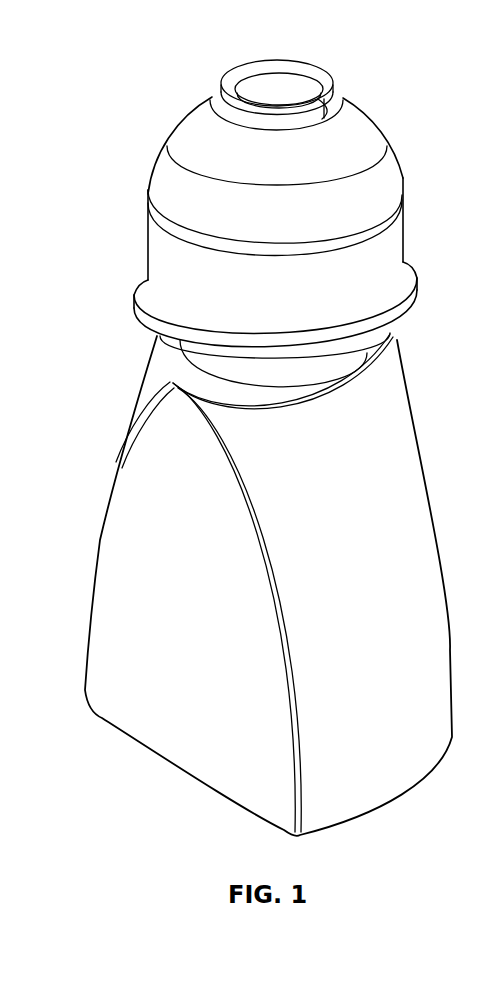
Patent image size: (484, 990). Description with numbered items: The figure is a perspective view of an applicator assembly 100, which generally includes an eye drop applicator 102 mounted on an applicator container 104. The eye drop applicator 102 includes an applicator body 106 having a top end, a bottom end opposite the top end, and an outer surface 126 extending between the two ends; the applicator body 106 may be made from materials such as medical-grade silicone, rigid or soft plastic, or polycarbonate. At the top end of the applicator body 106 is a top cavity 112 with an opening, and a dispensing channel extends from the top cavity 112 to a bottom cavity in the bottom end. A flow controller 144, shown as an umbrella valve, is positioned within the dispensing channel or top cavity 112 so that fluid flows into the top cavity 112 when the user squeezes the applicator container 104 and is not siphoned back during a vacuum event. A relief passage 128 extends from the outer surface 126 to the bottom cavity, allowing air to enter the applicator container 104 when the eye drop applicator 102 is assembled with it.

The applicator assembly 100 is at (122, 184).
The eye drop applicator 102 is at (188, 133).
The applicator container 104 is at (100, 533).
The applicator body 106 is at (385, 172).
The top cavity 112 is at (281, 67).
The outer surface 126 is at (167, 238).
The relief passage 128 is at (338, 104).
The flow controller 144 is at (253, 94).